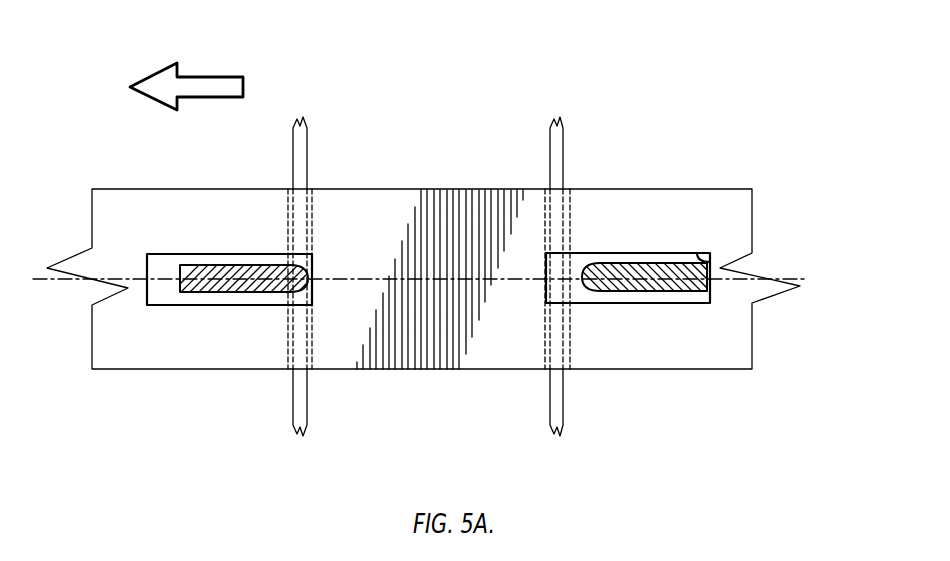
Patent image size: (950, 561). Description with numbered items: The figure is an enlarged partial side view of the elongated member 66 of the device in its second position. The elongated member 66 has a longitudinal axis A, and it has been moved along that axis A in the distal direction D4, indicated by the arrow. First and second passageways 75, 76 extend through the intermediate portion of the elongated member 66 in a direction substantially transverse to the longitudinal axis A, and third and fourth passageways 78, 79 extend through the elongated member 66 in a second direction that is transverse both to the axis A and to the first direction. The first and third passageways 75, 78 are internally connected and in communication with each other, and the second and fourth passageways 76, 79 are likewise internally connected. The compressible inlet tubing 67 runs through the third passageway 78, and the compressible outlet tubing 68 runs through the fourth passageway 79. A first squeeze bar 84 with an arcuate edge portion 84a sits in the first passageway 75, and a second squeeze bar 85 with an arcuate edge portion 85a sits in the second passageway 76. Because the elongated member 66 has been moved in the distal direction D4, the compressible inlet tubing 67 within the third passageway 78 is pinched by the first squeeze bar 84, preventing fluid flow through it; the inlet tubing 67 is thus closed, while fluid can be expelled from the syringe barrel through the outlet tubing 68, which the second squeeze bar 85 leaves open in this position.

The elongated member 66 is at (673, 208).
The compressible inlet tubing 67 is at (307, 138).
The compressible outlet tubing 68 is at (563, 148).
The first passageway 75 is at (154, 254).
The second passageway 76 is at (712, 257).
The third passageway 78 is at (308, 187).
The fourth passageway 79 is at (567, 187).
The first squeeze bar 84 is at (200, 283).
The arcuate edge portion 84a is at (300, 290).
The second squeeze bar 85 is at (648, 285).
The arcuate edge portion 85a is at (585, 288).
The longitudinal axis A is at (802, 278).
The distal direction D4 is at (186, 72).